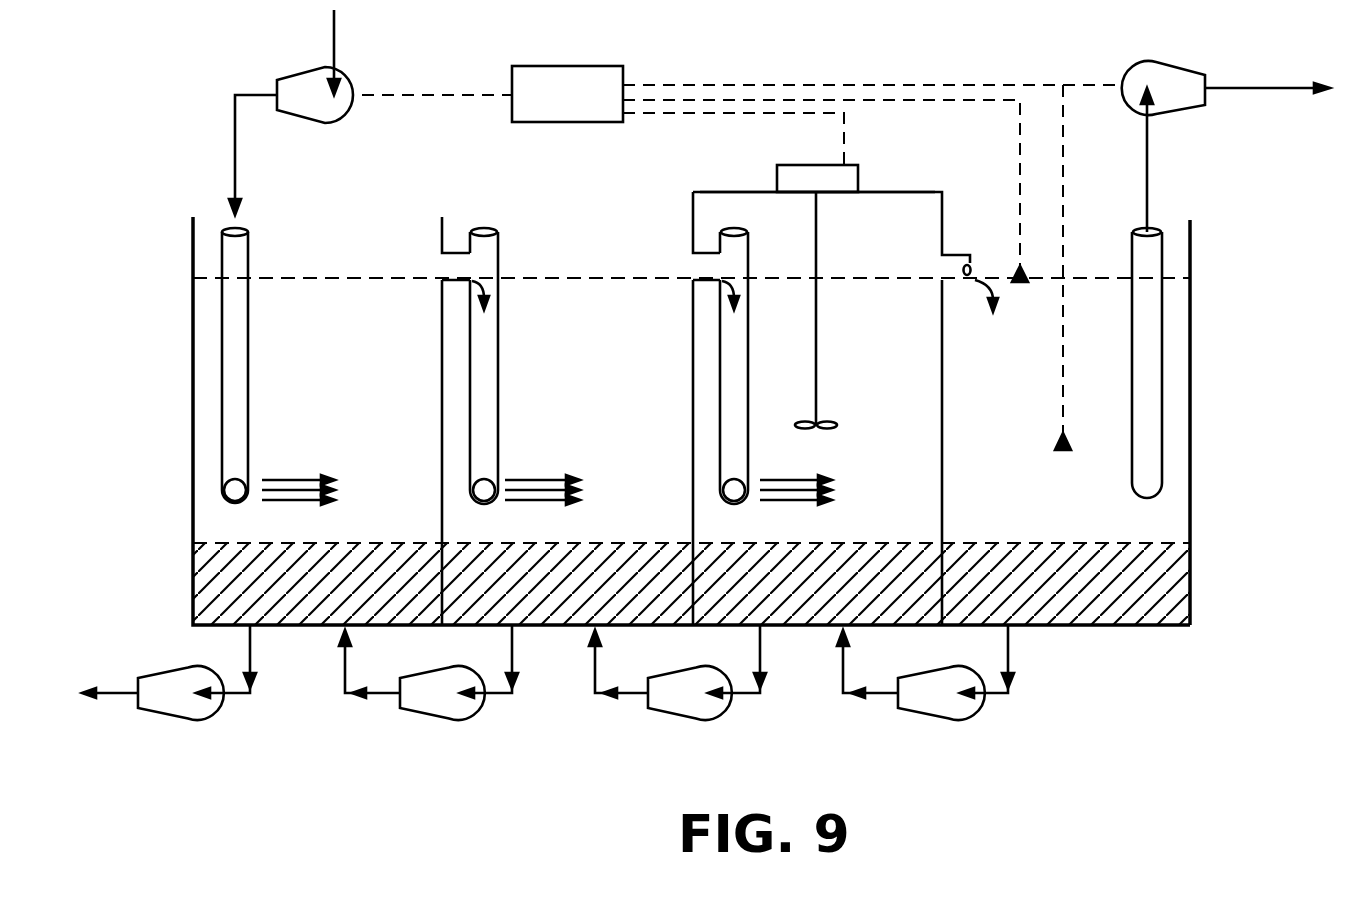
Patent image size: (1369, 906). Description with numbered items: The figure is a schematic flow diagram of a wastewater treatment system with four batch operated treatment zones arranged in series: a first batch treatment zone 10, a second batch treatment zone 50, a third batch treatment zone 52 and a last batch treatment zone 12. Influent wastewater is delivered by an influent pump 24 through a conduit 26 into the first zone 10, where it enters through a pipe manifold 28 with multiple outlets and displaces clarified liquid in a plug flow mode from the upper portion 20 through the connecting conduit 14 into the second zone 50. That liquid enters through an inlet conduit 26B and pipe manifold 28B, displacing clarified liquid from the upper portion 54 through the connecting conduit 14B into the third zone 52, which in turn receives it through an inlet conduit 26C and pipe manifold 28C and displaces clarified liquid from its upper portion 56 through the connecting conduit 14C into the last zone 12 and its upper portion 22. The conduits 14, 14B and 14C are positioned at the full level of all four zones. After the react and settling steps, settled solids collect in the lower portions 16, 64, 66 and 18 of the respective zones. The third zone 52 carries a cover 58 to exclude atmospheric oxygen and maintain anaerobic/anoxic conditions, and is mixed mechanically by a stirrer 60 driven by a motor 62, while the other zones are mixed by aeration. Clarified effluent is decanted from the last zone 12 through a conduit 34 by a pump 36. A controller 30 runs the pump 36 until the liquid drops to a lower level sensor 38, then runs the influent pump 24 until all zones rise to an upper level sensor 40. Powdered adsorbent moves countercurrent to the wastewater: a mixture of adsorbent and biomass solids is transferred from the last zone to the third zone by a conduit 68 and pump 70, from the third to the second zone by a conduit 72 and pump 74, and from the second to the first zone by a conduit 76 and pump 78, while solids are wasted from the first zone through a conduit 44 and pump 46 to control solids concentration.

The first batch treatment zone 10 is at (193, 372).
The last batch treatment zone 12 is at (1190, 428).
The connecting conduit 14 is at (440, 260).
The connecting conduit 14B is at (687, 260).
The connecting conduit 14C is at (957, 252).
The lower portion 16 is at (345, 603).
The lower portion 18 is at (1100, 603).
The upper portion 20 is at (400, 402).
The upper portion 22 is at (1085, 518).
The influent pump 24 is at (310, 70).
The conduit 26 is at (222, 256).
The inlet conduit 26B is at (500, 365).
The inlet conduit 26C is at (750, 352).
The pipe manifold 28 is at (225, 498).
The pipe manifold 28B is at (480, 507).
The pipe manifold 28C is at (730, 507).
The controller 30 is at (604, 10).
The conduit 34 is at (1162, 262).
The pump 36 is at (1137, 62).
The lower level sensor 38 is at (1058, 447).
The upper level sensor 40 is at (1022, 290).
The conduit 44 is at (232, 694).
The pump 46 is at (188, 722).
The second batch treatment zone 50 is at (600, 275).
The third batch treatment zone 52 is at (787, 260).
The upper portion 54 is at (715, 387).
The upper portion 56 is at (913, 402).
The cover 58 is at (707, 188).
The stirrer 60 is at (818, 430).
The motor 62 is at (858, 176).
The lower portion 64 is at (603, 603).
The lower portion 66 is at (870, 603).
The conduit 68 is at (843, 677).
The pump 70 is at (963, 722).
The conduit 72 is at (596, 668).
The pump 74 is at (720, 722).
The conduit 76 is at (345, 680).
The pump 78 is at (460, 722).